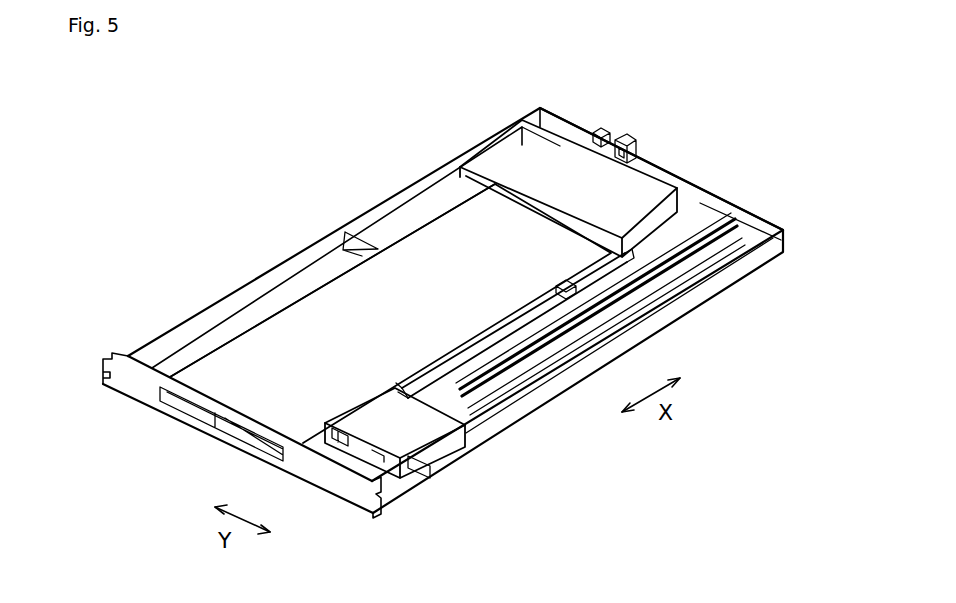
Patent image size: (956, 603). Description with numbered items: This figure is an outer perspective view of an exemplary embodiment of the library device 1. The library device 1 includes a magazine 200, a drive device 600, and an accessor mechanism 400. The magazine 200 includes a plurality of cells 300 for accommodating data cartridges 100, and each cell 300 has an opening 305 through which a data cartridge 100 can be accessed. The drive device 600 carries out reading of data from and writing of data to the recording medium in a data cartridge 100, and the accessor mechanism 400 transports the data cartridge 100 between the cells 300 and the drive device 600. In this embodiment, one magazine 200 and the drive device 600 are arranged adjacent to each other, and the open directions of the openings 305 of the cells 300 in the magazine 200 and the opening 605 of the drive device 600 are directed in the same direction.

The apparatus 1 is at (710, 462).
The data cartridge 100 is at (518, 313).
The magazine 200 is at (338, 302).
The cell 300 is at (613, 270).
The opening 305 is at (564, 288).
The accessor mechanism 400 is at (412, 465).
The drive device 600 is at (553, 160).
The opening 605 is at (668, 200).